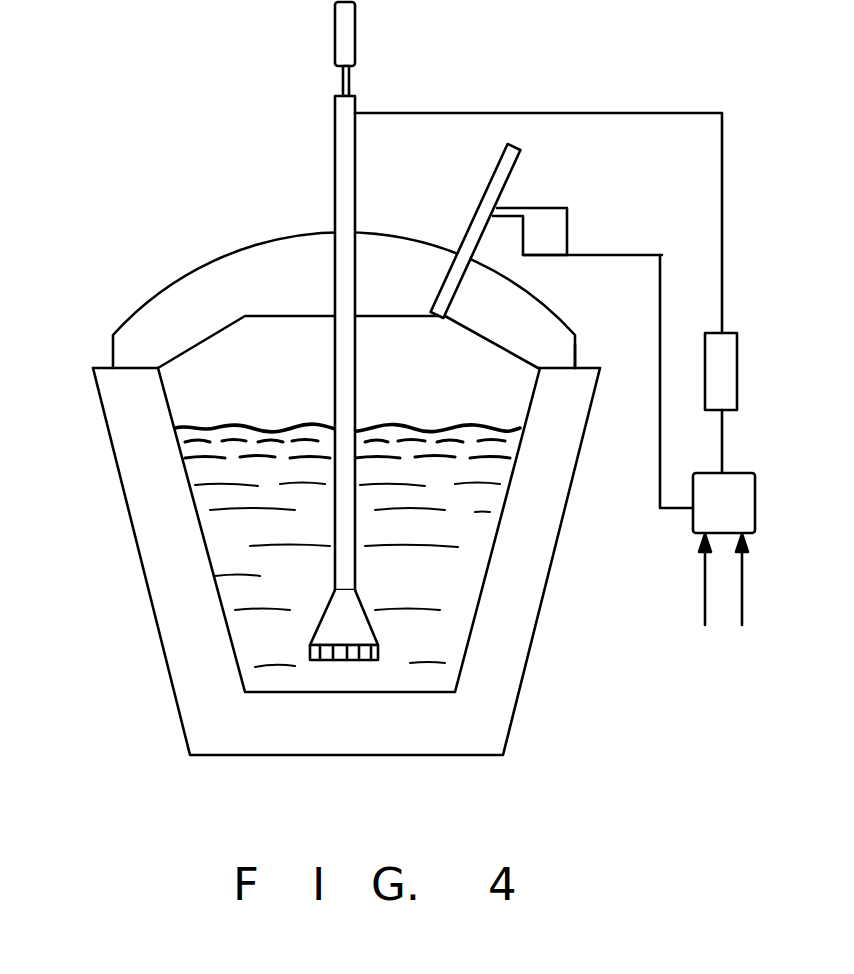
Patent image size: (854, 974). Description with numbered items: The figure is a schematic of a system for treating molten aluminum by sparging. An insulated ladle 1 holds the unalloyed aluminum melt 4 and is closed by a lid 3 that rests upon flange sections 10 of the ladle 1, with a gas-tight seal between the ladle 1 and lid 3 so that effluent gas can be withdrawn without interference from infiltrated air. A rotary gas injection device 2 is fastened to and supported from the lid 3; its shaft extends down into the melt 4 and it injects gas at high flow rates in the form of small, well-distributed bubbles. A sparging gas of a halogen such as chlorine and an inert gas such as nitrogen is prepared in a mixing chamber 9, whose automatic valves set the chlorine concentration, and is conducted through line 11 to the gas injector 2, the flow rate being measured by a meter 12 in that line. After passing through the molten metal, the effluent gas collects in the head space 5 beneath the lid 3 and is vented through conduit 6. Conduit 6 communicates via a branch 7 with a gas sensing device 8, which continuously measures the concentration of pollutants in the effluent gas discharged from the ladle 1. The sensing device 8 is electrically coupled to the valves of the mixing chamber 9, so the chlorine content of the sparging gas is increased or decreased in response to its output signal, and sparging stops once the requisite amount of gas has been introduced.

The insulated ladle 1 is at (495, 732).
The rotary gas injection device 2 is at (343, 131).
The lid 3 is at (147, 316).
The unalloyed aluminum melt 4 is at (208, 507).
The head space 5 is at (190, 382).
The conduit 6 is at (486, 199).
The branch 7 is at (506, 210).
The gas sensing device 8 is at (547, 243).
The mixing chamber 9 is at (738, 512).
The flange sections 10 is at (580, 363).
The line 11 is at (472, 112).
The meter 12 is at (737, 370).